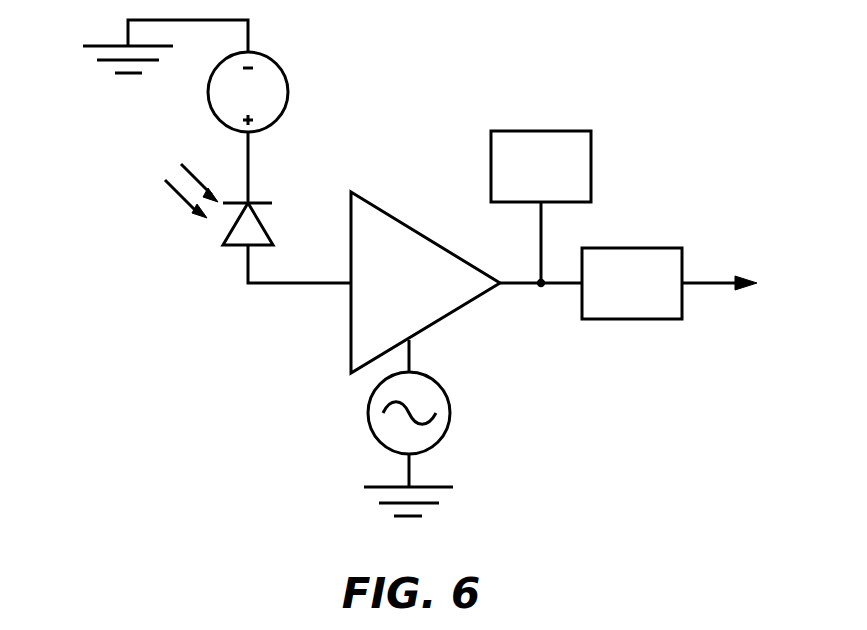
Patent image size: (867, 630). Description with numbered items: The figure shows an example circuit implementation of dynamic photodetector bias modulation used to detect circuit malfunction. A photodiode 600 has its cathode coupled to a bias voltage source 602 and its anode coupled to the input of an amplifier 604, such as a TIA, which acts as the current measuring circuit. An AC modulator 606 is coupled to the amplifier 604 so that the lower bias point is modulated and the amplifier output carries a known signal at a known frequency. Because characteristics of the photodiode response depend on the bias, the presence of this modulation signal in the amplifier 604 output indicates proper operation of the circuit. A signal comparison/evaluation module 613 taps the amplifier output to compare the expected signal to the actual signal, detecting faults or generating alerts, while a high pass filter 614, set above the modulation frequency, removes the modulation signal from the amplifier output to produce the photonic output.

The photodiode 600 is at (227, 247).
The bias voltage source 602 is at (289, 92).
The amplifier 604 is at (466, 282).
The AC modulator 606 is at (368, 413).
The signal comparison/evaluation module 613 is at (541, 209).
The high pass filter 614 is at (669, 283).